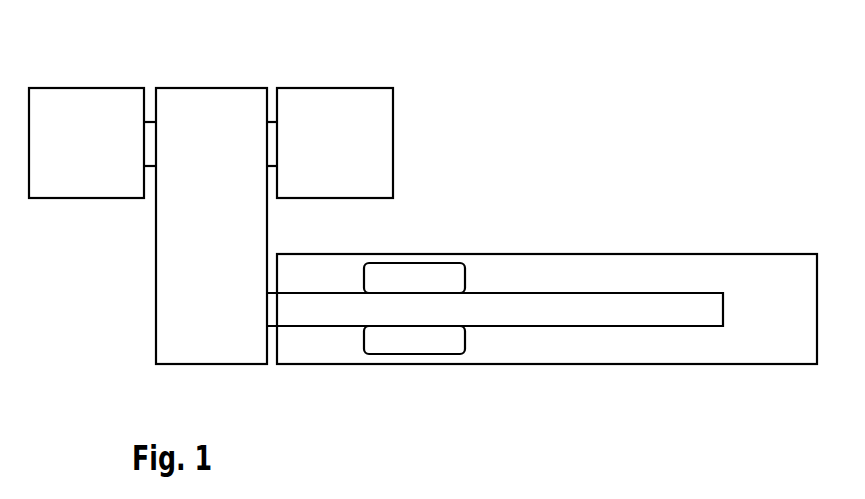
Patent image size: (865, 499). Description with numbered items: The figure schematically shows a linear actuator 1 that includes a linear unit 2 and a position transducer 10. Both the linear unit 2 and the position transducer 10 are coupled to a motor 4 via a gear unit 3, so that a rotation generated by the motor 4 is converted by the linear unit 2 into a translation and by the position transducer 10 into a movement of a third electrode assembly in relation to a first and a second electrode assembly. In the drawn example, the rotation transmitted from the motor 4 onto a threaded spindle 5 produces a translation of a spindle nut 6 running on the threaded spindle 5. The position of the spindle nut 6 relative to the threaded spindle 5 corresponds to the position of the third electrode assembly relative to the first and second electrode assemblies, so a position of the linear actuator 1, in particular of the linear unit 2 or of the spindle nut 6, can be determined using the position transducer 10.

The linear actuator 1 is at (754, 95).
The linear unit 2 is at (501, 230).
The gear unit 3 is at (155, 320).
The motor 4 is at (393, 142).
The threaded spindle 5 is at (542, 292).
The spindle nut 6 is at (418, 263).
The position transducer 10 is at (78, 198).